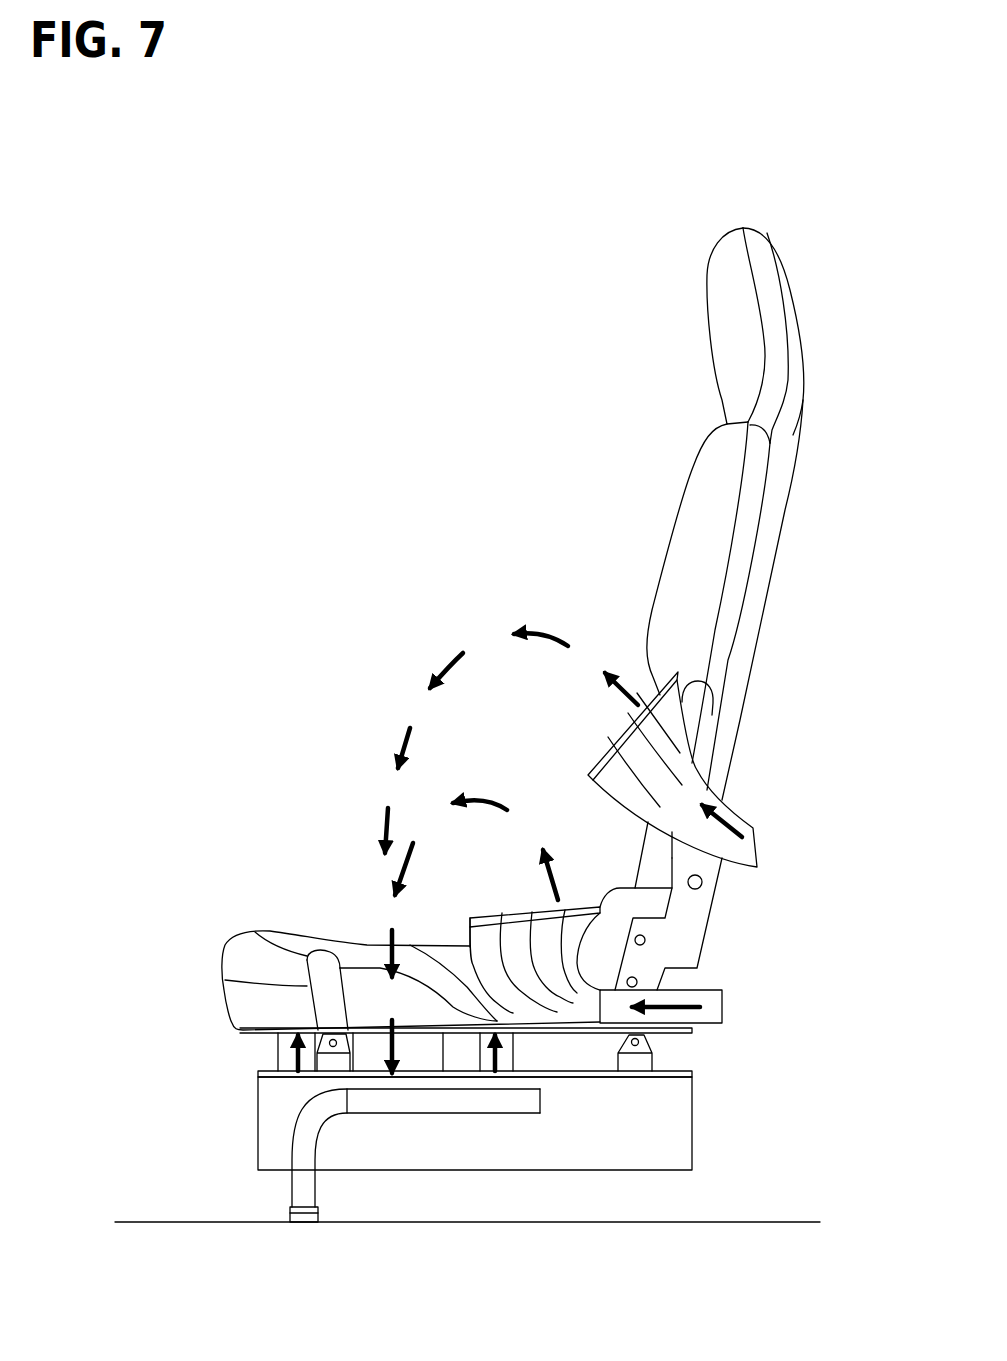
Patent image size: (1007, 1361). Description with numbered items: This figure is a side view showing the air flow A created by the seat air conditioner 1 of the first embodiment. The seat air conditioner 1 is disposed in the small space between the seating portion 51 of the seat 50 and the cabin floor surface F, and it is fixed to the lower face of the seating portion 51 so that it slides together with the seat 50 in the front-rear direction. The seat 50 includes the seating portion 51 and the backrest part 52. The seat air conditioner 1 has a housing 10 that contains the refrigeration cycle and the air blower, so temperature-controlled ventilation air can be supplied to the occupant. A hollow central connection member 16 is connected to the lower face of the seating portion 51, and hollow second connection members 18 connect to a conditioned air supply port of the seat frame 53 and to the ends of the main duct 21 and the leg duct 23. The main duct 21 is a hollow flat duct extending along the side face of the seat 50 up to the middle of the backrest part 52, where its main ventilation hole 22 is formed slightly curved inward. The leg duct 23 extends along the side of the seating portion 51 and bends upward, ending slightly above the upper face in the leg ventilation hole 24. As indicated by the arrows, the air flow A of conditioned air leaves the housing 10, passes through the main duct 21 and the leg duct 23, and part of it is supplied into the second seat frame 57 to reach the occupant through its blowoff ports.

The seat air conditioner 1 is at (703, 1117).
The housing 10 is at (610, 1150).
The central connection member 16 is at (447, 1047).
The second connection member 18 is at (278, 1046).
The main duct 21 is at (735, 865).
The main ventilation hole 22 is at (607, 748).
The leg duct 23 is at (703, 997).
The leg ventilation hole 24 is at (520, 920).
The seat 50 is at (573, 297).
The seating portion 51 is at (247, 950).
The backrest part 52 is at (705, 490).
The seat frame 53 is at (628, 848).
The second seat frame 57 is at (700, 705).
The cabin floor surface F is at (163, 1220).
The air flow A is at (550, 632).